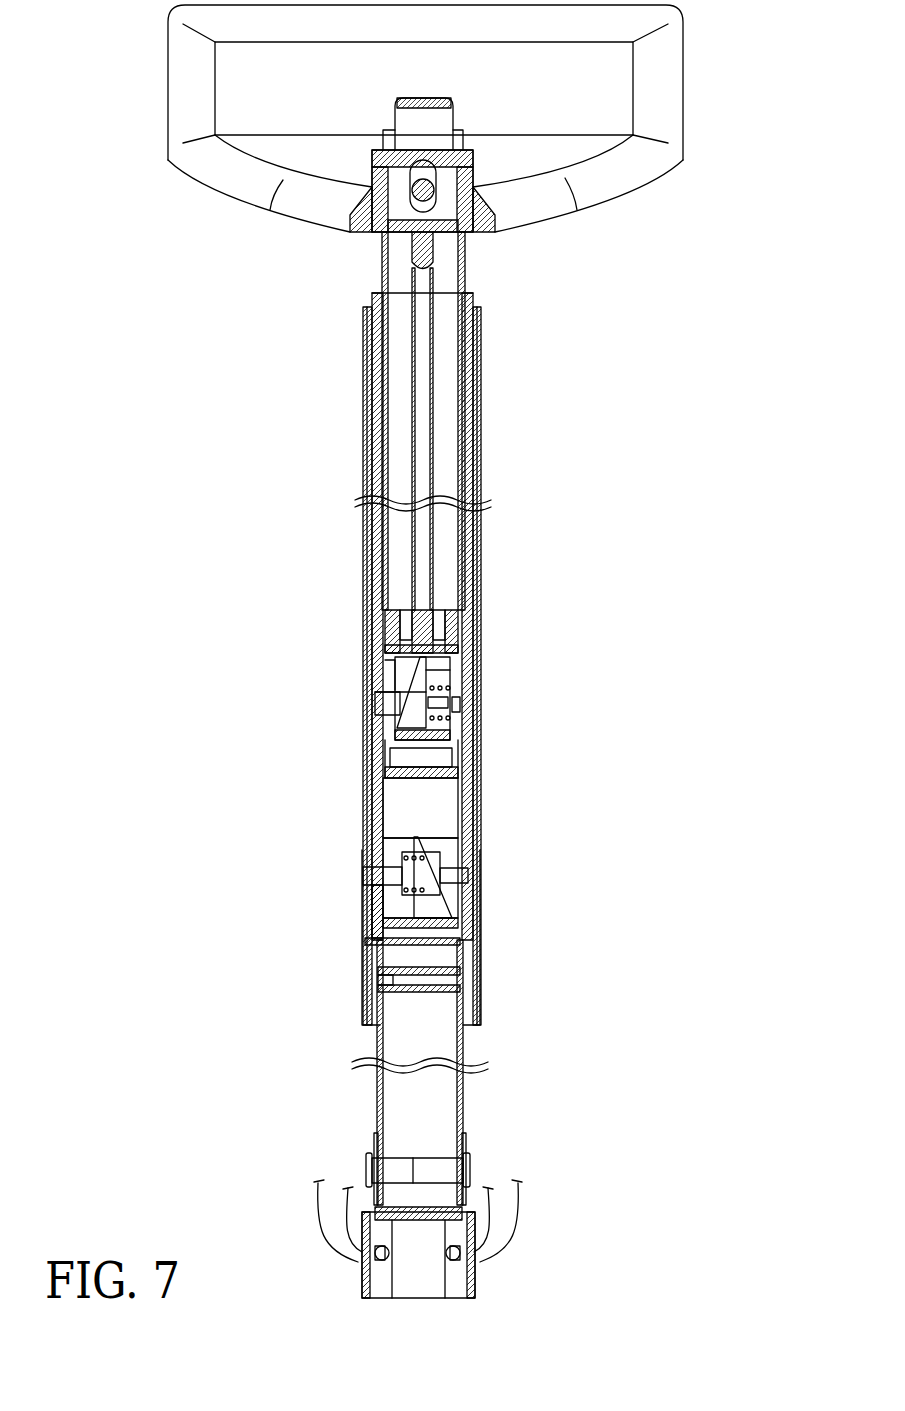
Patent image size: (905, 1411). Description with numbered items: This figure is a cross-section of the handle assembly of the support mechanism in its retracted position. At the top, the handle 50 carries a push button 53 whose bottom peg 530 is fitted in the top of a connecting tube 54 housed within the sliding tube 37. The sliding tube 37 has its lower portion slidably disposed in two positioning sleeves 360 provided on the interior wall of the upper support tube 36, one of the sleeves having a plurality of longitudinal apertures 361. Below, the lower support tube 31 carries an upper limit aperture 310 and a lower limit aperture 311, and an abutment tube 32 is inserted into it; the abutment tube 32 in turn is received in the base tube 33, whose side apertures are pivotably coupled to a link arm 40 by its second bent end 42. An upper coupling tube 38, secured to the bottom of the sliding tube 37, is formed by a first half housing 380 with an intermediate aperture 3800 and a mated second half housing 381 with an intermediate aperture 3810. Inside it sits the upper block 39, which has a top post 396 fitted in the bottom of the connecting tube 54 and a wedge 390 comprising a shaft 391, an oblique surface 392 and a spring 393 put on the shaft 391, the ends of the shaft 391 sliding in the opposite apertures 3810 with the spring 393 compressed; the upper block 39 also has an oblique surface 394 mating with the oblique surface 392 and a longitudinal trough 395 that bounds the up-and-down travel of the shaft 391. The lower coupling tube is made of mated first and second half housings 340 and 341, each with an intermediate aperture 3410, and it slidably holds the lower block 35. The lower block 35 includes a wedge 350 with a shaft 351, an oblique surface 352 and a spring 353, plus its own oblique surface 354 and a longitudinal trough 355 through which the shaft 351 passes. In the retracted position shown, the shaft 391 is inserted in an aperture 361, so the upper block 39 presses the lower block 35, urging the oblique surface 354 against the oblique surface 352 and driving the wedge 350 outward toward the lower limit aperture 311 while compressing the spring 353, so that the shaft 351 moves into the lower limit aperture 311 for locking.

The handle 50 is at (678, 78).
The push button 53 is at (445, 118).
The bottom peg 530 is at (405, 265).
The sliding tube 37 is at (465, 262).
The connecting tube 54 is at (405, 345).
The upper support tube 36 is at (480, 395).
The upper limit aperture 310 is at (485, 440).
The lower support tube 31 is at (485, 495).
The positioning sleeve 360 is at (368, 440).
The longitudinal aperture 361 is at (372, 385).
The lower limit aperture 311 is at (365, 850).
The upper coupling tube 38 is at (465, 612).
The top post 396 is at (410, 605).
The wedge 390 is at (460, 755).
The upper block 39 is at (408, 660).
The oblique surface 394 is at (465, 660).
The longitudinal trough 395 is at (390, 662).
The shaft 391 is at (375, 705).
The spring 393 is at (440, 690).
The oblique surface 392 is at (455, 700).
The intermediate aperture 3810 is at (463, 720).
The intermediate aperture 3800 is at (405, 760).
The first half housing 380 is at (410, 775).
The second half housing 381 is at (455, 765).
The lower block 35 is at (470, 810).
The first half housing 340 is at (410, 930).
The longitudinal trough 355 is at (460, 890).
The spring 353 is at (380, 890).
The oblique surface 354 is at (400, 855).
The shaft 351 is at (395, 878).
The intermediate aperture 3410 is at (470, 875).
The oblique surface 352 is at (385, 912).
The wedge 350 is at (465, 925).
The second half housing 341 is at (465, 960).
The abutment tube 32 is at (470, 1045).
The base tube 33 is at (475, 1290).
The second bent end 42 is at (355, 1255).
The link arm 40 is at (335, 1208).